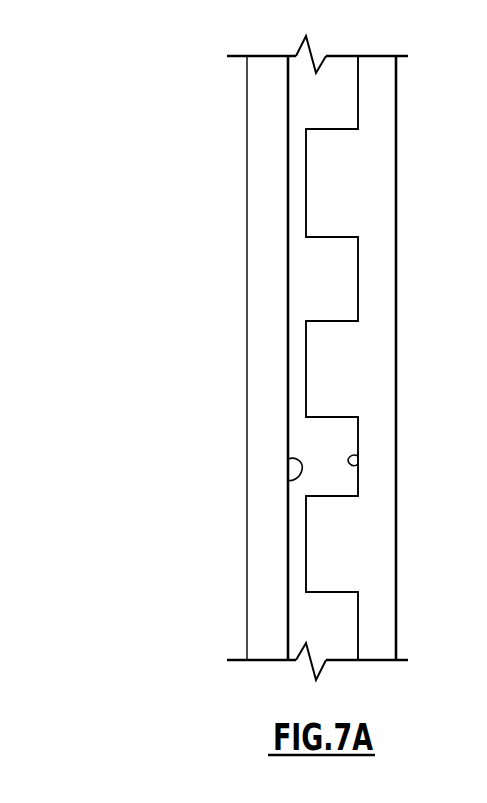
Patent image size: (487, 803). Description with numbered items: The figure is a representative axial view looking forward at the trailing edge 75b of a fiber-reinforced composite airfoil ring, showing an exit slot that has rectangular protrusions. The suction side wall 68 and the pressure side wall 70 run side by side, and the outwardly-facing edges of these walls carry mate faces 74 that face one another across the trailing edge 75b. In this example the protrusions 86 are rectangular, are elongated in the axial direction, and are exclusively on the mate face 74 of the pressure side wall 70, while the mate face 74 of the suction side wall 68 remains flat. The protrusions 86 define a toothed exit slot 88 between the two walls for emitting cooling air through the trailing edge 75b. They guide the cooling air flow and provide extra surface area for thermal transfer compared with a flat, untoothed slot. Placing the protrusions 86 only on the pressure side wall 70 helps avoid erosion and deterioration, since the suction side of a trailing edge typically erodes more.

The suction side wall 68 is at (265, 246).
The pressure side wall 70 is at (380, 373).
The protrusions 86 is at (324, 225).
The mate faces 74 is at (288, 480).
The toothed exit slot 88 is at (342, 609).
The trailing edge 75b is at (206, 406).